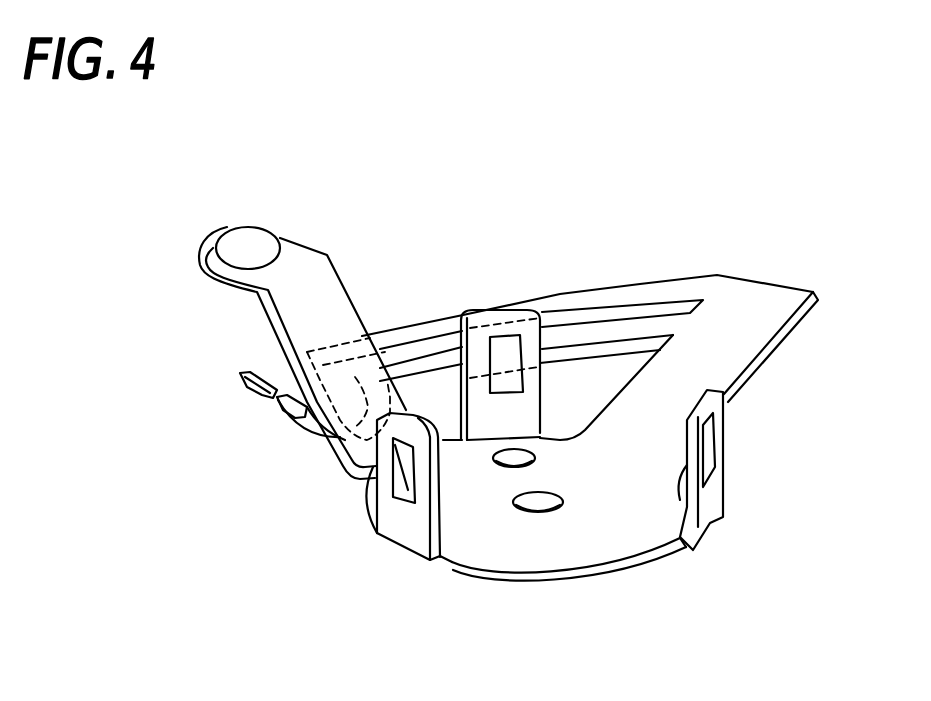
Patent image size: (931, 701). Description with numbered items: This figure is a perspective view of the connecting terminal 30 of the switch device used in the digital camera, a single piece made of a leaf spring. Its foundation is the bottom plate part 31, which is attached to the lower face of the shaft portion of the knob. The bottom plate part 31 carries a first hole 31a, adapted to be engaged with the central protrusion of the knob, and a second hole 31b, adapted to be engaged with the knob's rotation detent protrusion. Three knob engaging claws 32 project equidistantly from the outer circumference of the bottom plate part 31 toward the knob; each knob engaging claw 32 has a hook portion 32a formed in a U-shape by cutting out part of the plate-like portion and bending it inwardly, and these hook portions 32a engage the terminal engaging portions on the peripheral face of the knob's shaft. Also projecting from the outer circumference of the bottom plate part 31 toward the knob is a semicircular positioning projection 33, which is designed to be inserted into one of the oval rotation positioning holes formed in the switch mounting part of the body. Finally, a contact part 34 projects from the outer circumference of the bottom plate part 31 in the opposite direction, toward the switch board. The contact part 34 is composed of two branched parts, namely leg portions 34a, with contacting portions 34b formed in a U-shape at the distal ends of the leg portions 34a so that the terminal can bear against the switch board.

The connecting terminal 30 is at (627, 538).
The bottom plate part 31 is at (570, 543).
The first hole 31a is at (523, 513).
The second hole 31b is at (510, 468).
The knob engaging claw 32 is at (518, 328).
The hook portion 32a is at (400, 481).
The positioning projection 33 is at (247, 230).
The contact part 34 is at (737, 292).
The leg portion 34a is at (383, 337).
The contacting portion 34b is at (283, 420).